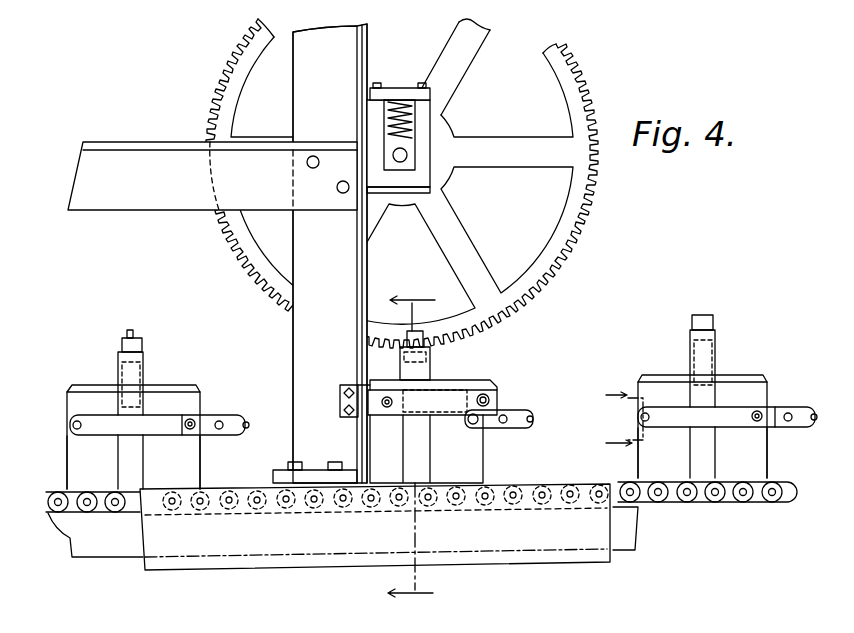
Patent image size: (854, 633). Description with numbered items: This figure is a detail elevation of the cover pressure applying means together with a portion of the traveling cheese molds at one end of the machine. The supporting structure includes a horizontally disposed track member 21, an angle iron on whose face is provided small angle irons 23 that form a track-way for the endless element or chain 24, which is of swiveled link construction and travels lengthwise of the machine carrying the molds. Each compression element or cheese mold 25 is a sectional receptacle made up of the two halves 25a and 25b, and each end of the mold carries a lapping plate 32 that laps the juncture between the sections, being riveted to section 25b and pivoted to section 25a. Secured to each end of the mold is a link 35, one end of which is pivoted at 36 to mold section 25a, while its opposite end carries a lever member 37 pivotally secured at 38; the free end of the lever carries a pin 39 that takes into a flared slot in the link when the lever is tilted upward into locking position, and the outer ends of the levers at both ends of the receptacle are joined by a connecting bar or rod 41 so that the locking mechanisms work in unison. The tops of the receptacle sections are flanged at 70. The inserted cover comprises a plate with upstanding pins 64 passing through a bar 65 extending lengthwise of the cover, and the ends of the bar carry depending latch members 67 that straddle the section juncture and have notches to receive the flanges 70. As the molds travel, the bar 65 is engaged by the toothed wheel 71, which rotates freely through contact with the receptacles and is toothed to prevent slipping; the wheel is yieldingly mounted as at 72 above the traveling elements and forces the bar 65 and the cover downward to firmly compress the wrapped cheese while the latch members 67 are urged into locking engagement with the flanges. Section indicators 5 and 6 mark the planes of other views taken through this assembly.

The yielding mounting 72 is at (407, 152).
The toothed wheel 71 is at (218, 222).
The section line 5 is at (411, 446).
The section line 6 is at (623, 420).
The lapping plate 32 is at (410, 478).
The flange 70 is at (158, 415).
The link 35 is at (172, 415).
The lever member 37 is at (203, 420).
The pin 39 is at (192, 421).
The pivot 38 is at (222, 424).
The connecting bar or rod 41 is at (248, 426).
The pivot 36 is at (78, 421).
The compression element or cheese mold 25 is at (60, 413).
The mold section 25a is at (638, 410).
The mold section 25b is at (197, 445).
The latch member 67 is at (138, 380).
The bar 65 is at (143, 348).
The pin 64 is at (135, 333).
The track member 21 is at (576, 548).
The angle iron 23 is at (624, 550).
The endless element or chain 24 is at (705, 505).